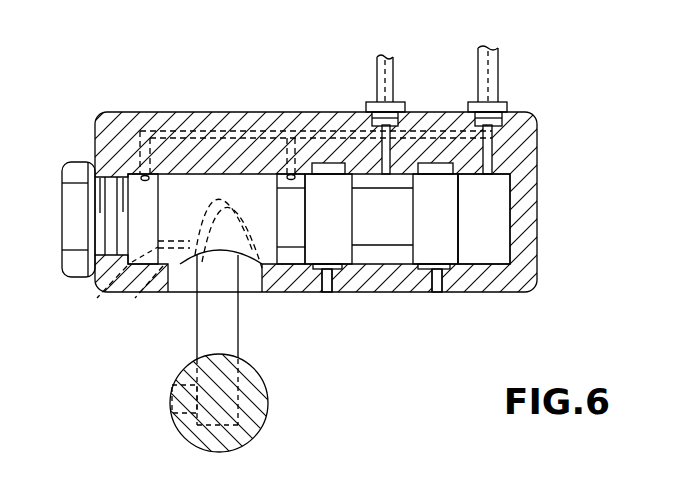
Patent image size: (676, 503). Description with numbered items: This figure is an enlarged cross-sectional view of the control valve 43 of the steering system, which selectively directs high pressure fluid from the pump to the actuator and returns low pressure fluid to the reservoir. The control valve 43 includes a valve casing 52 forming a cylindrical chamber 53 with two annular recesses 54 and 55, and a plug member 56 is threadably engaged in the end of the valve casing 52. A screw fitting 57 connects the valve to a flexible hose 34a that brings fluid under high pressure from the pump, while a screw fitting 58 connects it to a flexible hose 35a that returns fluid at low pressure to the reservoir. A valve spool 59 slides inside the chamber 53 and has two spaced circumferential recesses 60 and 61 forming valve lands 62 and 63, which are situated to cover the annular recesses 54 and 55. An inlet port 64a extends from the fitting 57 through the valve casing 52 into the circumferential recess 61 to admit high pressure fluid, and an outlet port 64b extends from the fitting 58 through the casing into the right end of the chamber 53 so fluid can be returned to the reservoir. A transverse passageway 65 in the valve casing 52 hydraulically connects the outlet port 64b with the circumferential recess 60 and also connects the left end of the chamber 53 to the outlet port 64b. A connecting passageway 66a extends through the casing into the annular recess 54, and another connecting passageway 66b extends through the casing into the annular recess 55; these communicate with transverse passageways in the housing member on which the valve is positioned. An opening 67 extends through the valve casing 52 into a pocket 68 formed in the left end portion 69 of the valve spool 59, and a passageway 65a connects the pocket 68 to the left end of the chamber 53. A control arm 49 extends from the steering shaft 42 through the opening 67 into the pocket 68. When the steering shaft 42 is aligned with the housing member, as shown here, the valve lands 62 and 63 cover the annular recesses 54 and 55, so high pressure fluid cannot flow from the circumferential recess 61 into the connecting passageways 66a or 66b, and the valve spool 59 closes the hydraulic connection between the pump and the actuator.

The flexible hose 34a is at (377, 62).
The flexible hose 35a is at (499, 60).
The steering shaft 42 is at (171, 425).
The control valve 43 is at (563, 146).
The control arm 49 is at (200, 338).
The valve casing 52 is at (170, 112).
The cylindrical chamber 53 is at (497, 240).
The annular recess 54 is at (303, 292).
The annular recess 55 is at (410, 278).
The plug member 56 is at (62, 232).
The screw fitting 57 is at (370, 103).
The screw fitting 58 is at (505, 105).
The valve spool 59 is at (462, 199).
The circumferential recess 60 is at (270, 262).
The circumferential recess 61 is at (380, 257).
The valve land 62 is at (313, 202).
The valve land 63 is at (425, 202).
The inlet port 64a is at (388, 143).
The outlet port 64b is at (489, 143).
The transverse passageway 65 is at (322, 128).
The passageway 65a is at (100, 292).
The connecting passageway 66a is at (323, 282).
The connecting passageway 66b is at (437, 291).
The opening 67 is at (187, 283).
The pocket 68 is at (144, 292).
The left end portion 69 is at (168, 209).